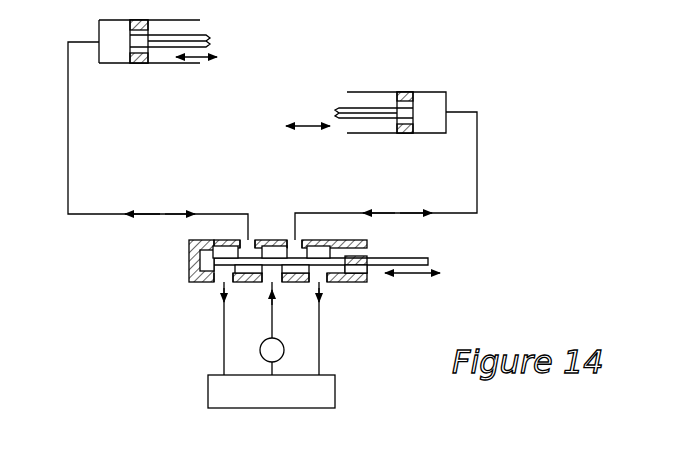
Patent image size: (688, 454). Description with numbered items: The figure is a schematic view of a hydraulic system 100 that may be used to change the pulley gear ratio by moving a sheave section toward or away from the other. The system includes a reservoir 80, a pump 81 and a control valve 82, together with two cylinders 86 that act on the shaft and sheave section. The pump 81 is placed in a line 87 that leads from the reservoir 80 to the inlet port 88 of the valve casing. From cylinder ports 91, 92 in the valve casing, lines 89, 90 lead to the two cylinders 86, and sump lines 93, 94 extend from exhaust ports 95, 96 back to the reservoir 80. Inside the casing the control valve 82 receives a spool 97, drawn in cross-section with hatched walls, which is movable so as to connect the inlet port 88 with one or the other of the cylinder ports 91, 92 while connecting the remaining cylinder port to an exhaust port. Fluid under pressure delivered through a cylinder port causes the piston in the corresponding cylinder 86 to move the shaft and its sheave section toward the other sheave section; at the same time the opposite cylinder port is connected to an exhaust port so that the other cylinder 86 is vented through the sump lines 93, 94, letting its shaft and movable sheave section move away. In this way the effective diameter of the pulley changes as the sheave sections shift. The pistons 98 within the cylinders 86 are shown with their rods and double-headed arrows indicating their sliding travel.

The reservoir 80 is at (271, 391).
The pump 81 is at (259, 358).
The control valve 82 is at (314, 257).
The cylinders 86 is at (109, 57).
The line 87 is at (274, 328).
The inlet port 88 is at (267, 283).
The line 89 is at (147, 213).
The line 90 is at (407, 212).
The cylinder port 91 is at (297, 238).
The cylinder port 92 is at (245, 237).
The sump line 93 is at (322, 322).
The sump line 94 is at (223, 323).
The exhaust port 95 is at (215, 285).
The exhaust port 96 is at (322, 286).
The spool 97 is at (270, 250).
The piston 98 is at (138, 50).
The hydraulic system 100 is at (175, 238).